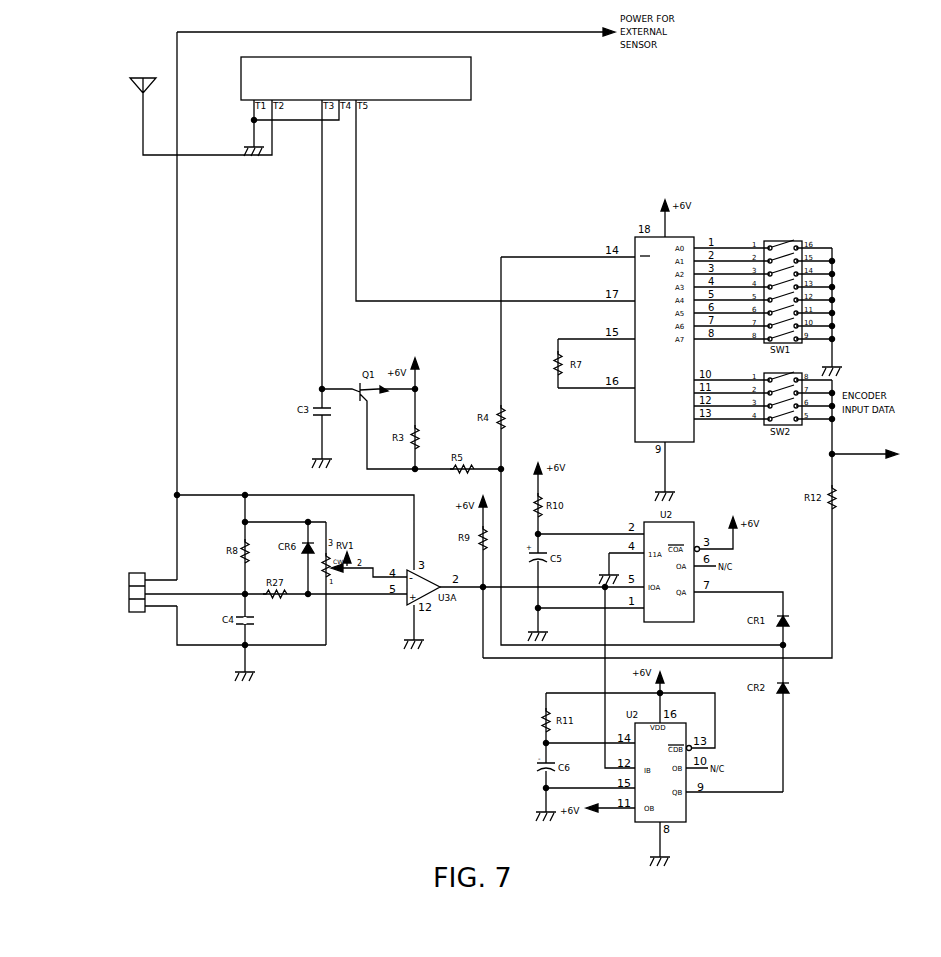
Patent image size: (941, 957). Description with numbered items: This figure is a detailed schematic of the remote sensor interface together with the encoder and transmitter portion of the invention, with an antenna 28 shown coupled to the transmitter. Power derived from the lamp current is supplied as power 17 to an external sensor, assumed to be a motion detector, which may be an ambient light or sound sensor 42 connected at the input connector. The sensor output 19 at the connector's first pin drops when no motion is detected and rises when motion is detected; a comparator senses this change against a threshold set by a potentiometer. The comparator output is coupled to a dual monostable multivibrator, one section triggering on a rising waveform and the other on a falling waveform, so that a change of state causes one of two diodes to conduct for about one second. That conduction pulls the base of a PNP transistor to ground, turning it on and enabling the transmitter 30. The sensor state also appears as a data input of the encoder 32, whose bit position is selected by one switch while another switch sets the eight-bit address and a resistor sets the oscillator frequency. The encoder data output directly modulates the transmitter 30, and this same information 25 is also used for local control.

The power to external sensor 17 is at (380, 293).
The sensor output 19 is at (202, 593).
The encoder output information 25 is at (863, 443).
The antenna 28 is at (120, 90).
The transmitter 30 is at (475, 83).
The encoder 32 is at (630, 412).
The ambient light or sound sensors 42 is at (114, 586).